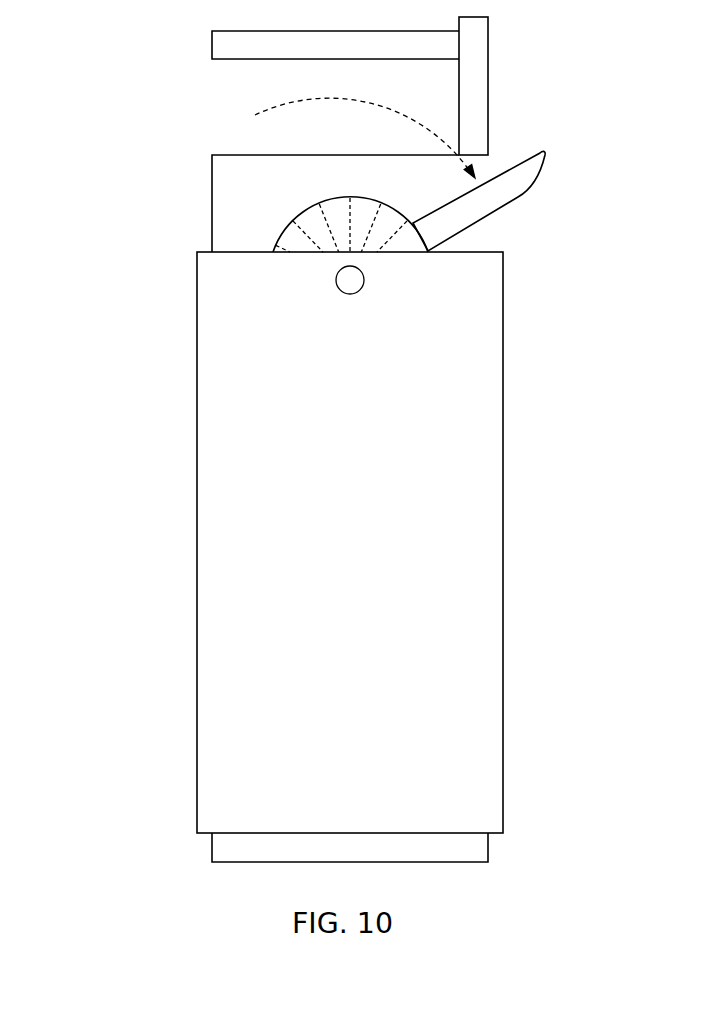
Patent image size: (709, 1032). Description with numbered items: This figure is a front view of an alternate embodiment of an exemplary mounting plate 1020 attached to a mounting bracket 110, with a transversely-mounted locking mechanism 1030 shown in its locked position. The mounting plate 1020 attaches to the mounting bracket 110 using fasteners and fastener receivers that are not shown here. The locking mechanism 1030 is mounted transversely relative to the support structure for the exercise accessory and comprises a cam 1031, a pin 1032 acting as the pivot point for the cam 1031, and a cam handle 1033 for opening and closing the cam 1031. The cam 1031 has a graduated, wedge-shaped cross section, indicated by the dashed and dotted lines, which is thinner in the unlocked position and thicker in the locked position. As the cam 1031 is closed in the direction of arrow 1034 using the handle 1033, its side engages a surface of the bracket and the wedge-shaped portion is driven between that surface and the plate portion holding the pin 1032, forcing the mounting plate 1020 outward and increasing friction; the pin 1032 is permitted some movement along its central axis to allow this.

The mounting bracket 110 is at (502, 60).
The mounting plate 1020 is at (530, 543).
The transversely-mounted locking mechanism 1030 is at (421, 272).
The cam 1031 is at (293, 238).
The pin 1032 is at (350, 280).
The cam handle 1033 is at (500, 197).
The arrow 1034 is at (238, 99).